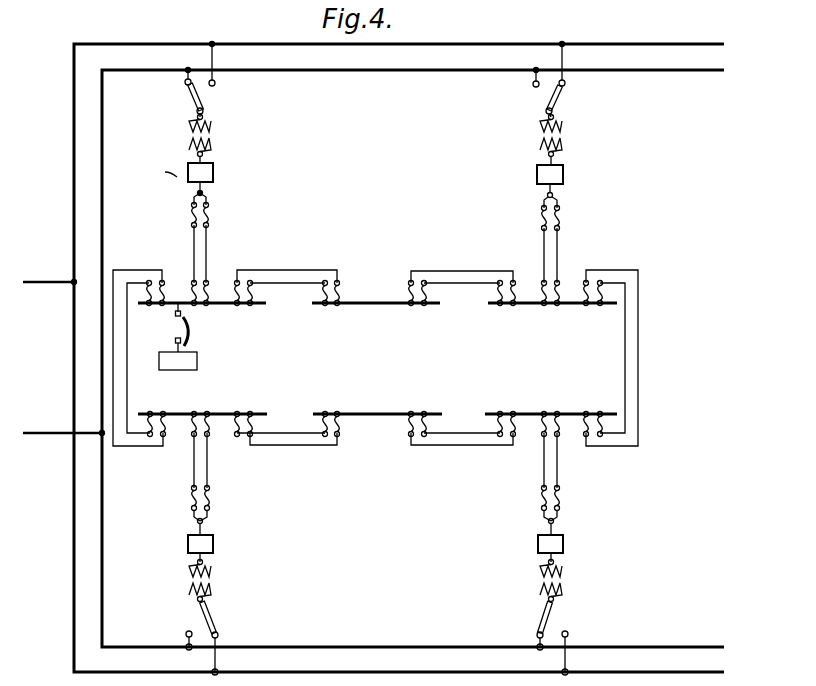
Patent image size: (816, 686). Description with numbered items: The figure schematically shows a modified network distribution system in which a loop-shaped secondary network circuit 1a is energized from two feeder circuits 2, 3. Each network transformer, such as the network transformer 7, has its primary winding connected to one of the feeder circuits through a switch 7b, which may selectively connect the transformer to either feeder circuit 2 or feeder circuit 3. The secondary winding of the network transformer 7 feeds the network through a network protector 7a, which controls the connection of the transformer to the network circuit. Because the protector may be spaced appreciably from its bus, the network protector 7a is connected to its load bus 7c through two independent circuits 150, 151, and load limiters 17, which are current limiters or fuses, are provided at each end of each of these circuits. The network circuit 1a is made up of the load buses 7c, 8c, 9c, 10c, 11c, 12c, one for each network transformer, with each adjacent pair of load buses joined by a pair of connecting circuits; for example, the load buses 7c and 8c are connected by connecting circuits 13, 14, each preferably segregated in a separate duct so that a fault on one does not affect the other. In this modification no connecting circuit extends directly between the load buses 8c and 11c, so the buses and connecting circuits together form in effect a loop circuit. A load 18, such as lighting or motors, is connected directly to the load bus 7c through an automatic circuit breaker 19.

The secondary network circuit 1a is at (486, 371).
The feeder circuit 2 is at (48, 280).
The feeder circuit 3 is at (48, 432).
The network transformer 7 is at (213, 146).
The network protector 7a is at (214, 175).
The switch 7b is at (204, 100).
The load bus 7c is at (224, 304).
The load bus 8c is at (376, 304).
The load bus 9c is at (531, 304).
The load bus 10c is at (226, 409).
The load bus 11c is at (390, 410).
The load bus 12c is at (571, 410).
The connecting circuit 13 is at (296, 271).
The connecting circuit 14 is at (298, 285).
The load limiter 17 is at (190, 221).
The load 18 is at (198, 361).
The automatic circuit breaker 19 is at (173, 331).
The independent circuit 150 is at (193, 250).
The independent circuit 151 is at (208, 249).